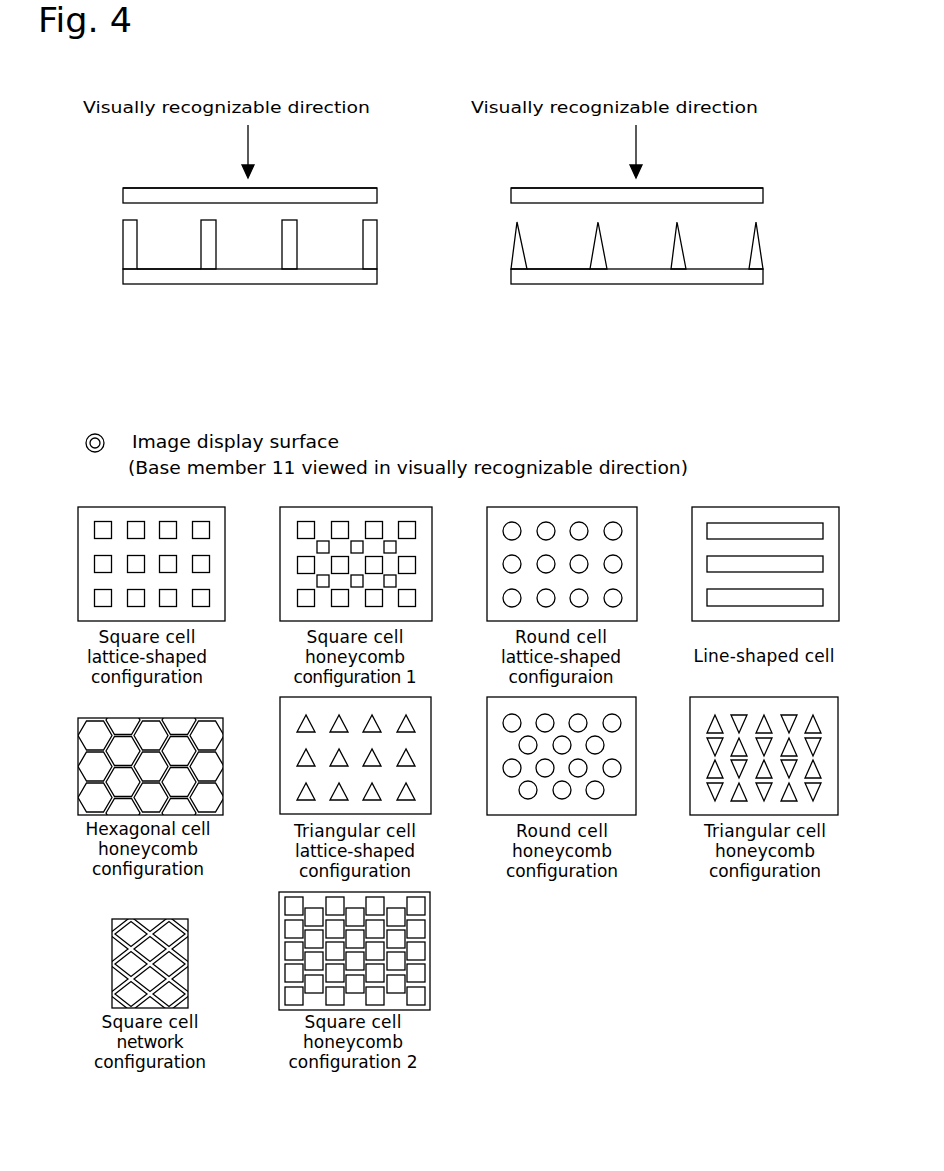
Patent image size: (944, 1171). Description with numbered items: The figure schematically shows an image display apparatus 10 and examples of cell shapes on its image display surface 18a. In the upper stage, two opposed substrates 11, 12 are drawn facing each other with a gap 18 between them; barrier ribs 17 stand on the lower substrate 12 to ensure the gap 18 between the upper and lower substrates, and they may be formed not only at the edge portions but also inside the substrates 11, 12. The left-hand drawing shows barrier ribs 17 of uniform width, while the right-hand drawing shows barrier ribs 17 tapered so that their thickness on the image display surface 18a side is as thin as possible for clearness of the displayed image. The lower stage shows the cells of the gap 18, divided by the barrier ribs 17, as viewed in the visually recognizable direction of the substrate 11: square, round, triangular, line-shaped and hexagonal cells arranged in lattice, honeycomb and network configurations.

The image display apparatus 10 is at (371, 160).
The substrate 11 is at (123, 195).
The substrate 12 is at (123, 278).
The barrier rib 17 is at (128, 245).
The gap 18 is at (170, 252).
The image display surface 18a is at (168, 188).